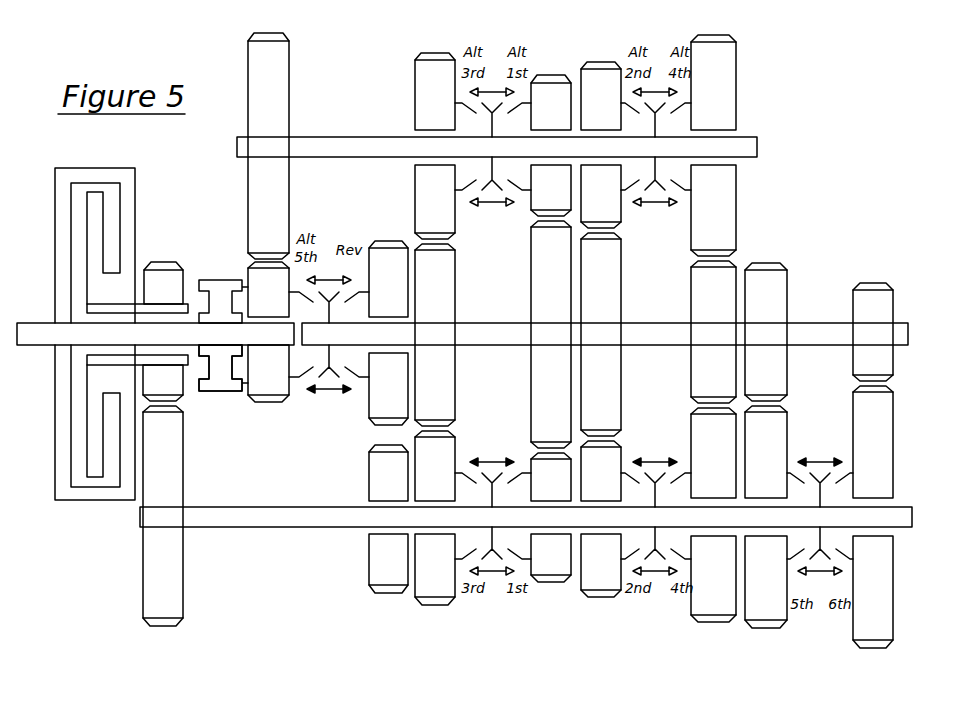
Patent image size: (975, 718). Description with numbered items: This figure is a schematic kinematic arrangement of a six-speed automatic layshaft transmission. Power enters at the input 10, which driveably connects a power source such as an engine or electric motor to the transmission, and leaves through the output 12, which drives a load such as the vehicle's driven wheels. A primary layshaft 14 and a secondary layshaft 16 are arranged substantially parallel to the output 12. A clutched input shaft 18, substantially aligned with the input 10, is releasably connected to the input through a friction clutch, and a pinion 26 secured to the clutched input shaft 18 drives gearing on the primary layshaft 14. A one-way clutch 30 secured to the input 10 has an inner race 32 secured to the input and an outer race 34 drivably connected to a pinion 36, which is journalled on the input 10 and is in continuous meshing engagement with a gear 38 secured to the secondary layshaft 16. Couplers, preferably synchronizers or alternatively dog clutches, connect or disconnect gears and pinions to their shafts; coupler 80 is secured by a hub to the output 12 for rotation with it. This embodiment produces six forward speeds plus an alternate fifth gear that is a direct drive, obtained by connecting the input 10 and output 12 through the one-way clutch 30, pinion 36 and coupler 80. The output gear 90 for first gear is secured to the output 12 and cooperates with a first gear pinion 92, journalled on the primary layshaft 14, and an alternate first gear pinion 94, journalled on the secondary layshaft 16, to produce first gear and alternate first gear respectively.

The input 10 is at (30, 333).
The output 12 is at (817, 330).
The primary layshaft 14 is at (215, 520).
The secondary layshaft 16 is at (748, 147).
The clutched input shaft 18 is at (117, 310).
The pinion 26 is at (165, 266).
The one-way clutch 30 is at (204, 406).
The inner race 32 is at (208, 316).
The outer race 34 is at (223, 388).
The pinion 36 is at (270, 403).
The gear 38 is at (242, 146).
The coupler 80 is at (335, 234).
The output gear 90 is at (535, 367).
The first gear pinion 92 is at (553, 583).
The alternate first gear pinion 94 is at (548, 75).